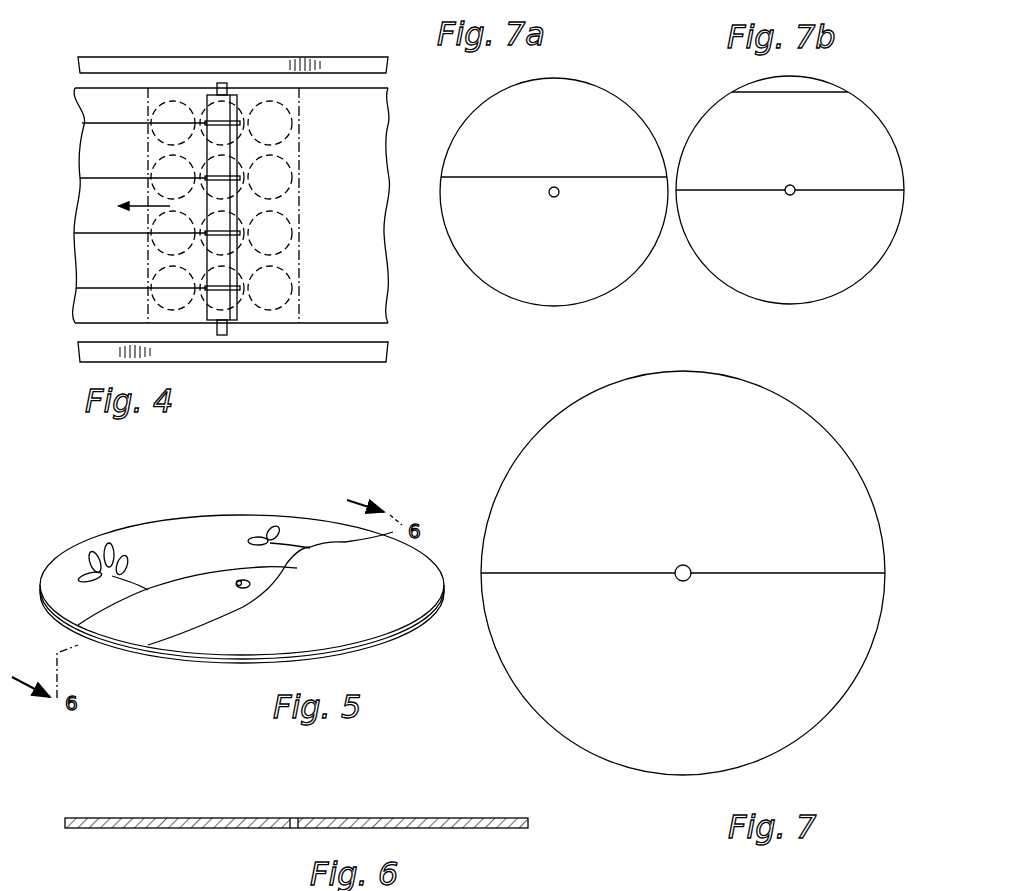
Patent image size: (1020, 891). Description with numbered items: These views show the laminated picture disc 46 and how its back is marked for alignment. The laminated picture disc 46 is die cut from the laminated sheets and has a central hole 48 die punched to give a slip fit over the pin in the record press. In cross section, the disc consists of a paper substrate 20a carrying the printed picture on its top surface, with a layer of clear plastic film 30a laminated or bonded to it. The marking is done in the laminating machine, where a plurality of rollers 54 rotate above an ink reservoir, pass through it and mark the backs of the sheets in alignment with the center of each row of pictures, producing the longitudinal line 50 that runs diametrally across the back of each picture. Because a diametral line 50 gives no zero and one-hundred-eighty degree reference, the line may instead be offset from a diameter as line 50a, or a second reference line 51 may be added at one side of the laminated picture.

In FIG. 7A, the paper substrate 20a is at (516, 283).
In FIG. 7B, the paper substrate 20a is at (755, 283).
In FIG. 7, the paper substrate 20a is at (527, 476).
In FIG. 5, the paper substrate 20a is at (242, 589).
In FIG. 6, the paper substrate 20a is at (203, 828).
In FIG. 6, the layer of clear plastic film 30a is at (235, 818).
In FIG. 5, the laminated picture disc 46 is at (180, 532).
In FIG. 7A, the central hole 48 is at (553, 188).
In FIG. 7B, the central hole 48 is at (790, 185).
In FIG. 7, the central hole 48 is at (683, 573).
In FIG. 5, the central hole 48 is at (240, 582).
In FIG. 6, the central hole 48 is at (298, 820).
In FIG. 4, the line 50 is at (112, 123).
In FIG. 7B, the line 50 is at (742, 190).
In FIG. 7, the line 50 is at (603, 573).
In FIG. 7A, the line 50a is at (485, 177).
In FIG. 7B, the second reference line 51 is at (752, 90).
In FIG. 4, the rollers 54 is at (222, 123).